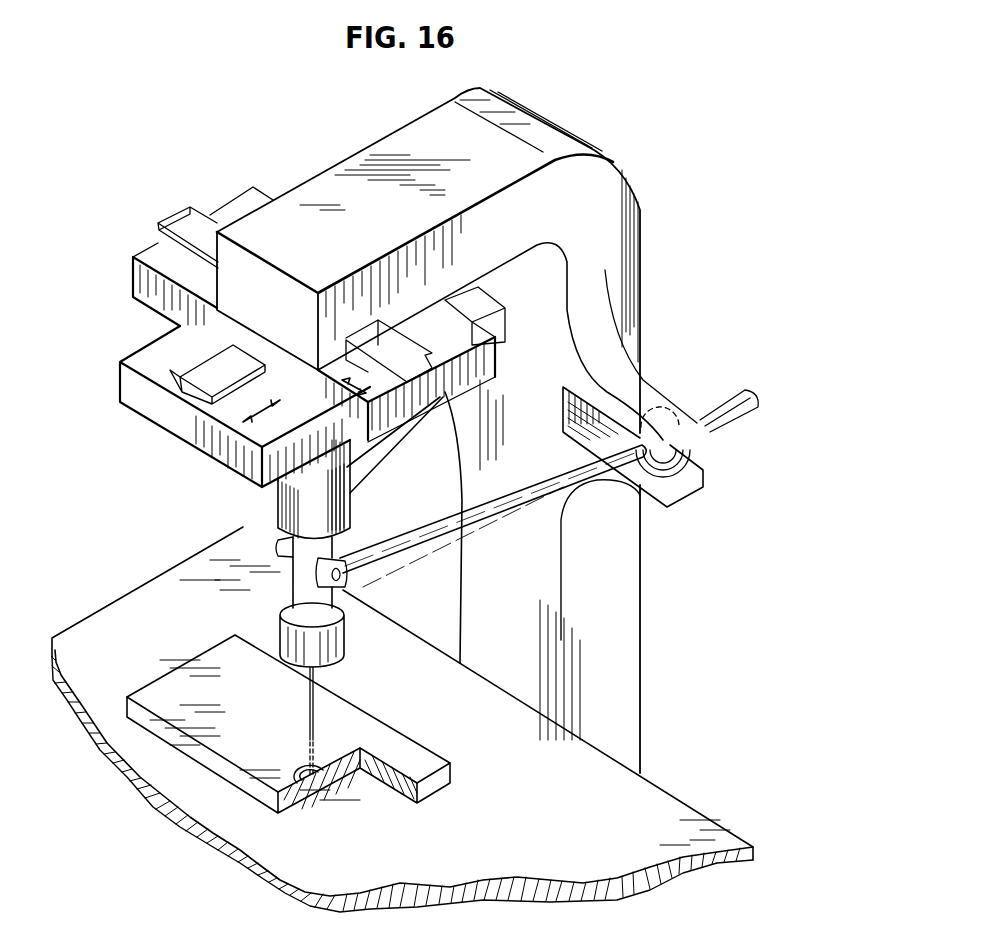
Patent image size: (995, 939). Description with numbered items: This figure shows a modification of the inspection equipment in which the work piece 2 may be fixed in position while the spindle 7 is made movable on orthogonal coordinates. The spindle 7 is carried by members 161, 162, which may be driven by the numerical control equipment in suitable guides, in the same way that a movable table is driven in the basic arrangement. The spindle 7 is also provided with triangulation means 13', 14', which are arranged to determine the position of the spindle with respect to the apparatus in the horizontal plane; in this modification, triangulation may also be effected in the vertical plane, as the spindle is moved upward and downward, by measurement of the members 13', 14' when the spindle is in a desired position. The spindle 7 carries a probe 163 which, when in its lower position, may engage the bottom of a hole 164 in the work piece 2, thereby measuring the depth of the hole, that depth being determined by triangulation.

The work piece 2 is at (112, 607).
The spindle 7 is at (297, 585).
The triangulation means 13' is at (389, 463).
The triangulation means 14' is at (493, 516).
The member 161 is at (152, 250).
The member 162 is at (150, 350).
The probe 163 is at (320, 690).
The hole 164 is at (313, 768).